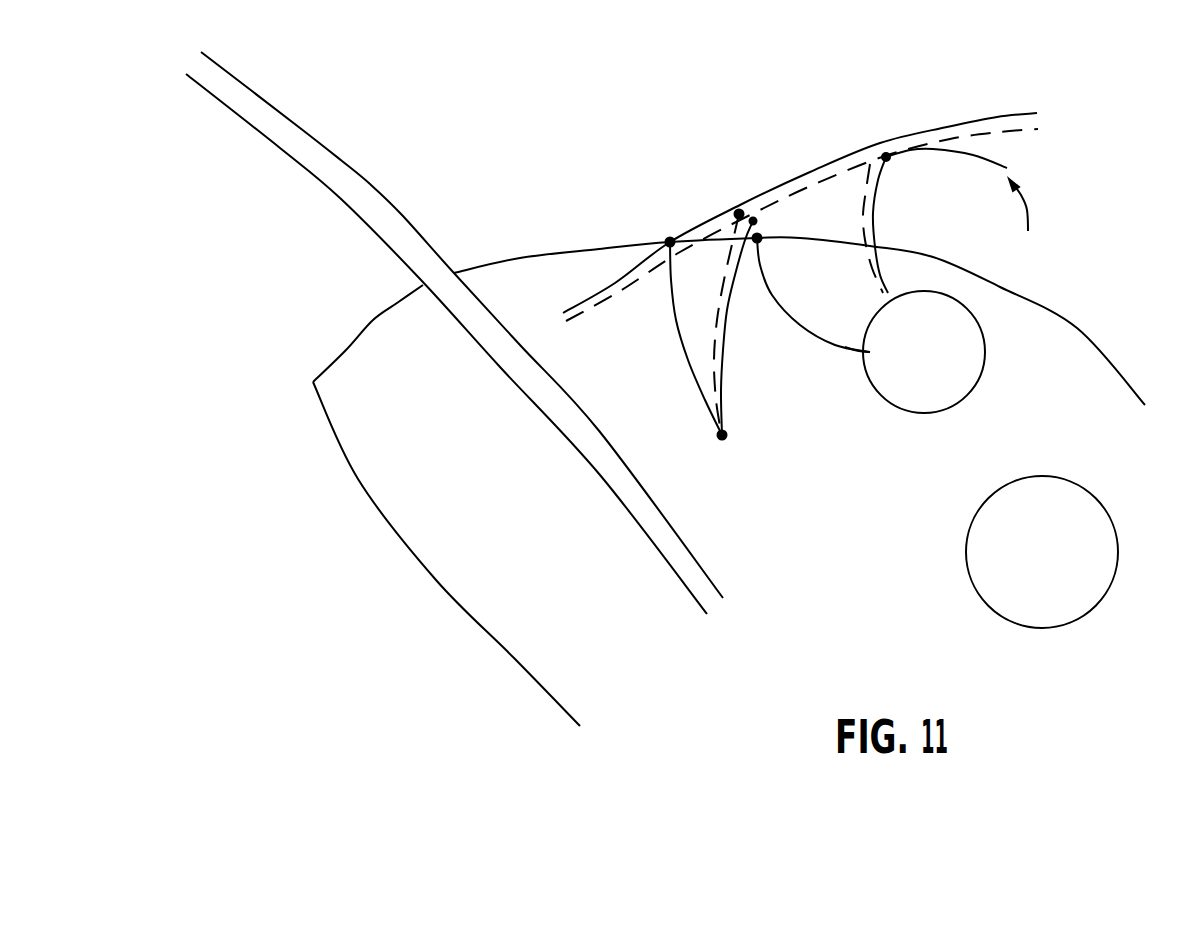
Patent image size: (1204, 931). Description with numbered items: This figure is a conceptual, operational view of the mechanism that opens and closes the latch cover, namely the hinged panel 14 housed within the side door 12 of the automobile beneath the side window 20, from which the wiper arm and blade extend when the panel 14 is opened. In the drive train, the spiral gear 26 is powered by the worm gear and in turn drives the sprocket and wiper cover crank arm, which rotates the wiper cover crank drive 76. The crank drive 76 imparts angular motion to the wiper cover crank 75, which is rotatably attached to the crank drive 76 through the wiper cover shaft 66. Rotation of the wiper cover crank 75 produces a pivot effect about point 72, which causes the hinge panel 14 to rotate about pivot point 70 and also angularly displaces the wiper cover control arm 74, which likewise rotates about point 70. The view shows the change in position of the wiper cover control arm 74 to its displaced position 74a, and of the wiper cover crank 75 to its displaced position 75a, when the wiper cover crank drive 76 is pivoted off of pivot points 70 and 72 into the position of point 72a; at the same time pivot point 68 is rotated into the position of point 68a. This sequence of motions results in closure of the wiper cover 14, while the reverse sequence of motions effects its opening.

The side door 12 is at (1077, 328).
The hinged panel 14 is at (885, 139).
The side window 20 is at (300, 129).
The spiral gear 26 is at (1058, 605).
The wiper cover shaft 66 is at (868, 353).
The pivot point 68 is at (756, 224).
The rotated position of pivot point 68 68a is at (668, 240).
The pivot point 70 is at (723, 440).
The pivot point 72 is at (978, 190).
The pivoted position of point 72 72a is at (739, 214).
The wiper cover control arm 74 is at (818, 342).
The displaced position of wiper cover control arm 74a is at (647, 338).
The wiper cover crank 75 is at (877, 223).
The displaced position of wiper cover crank 75a is at (723, 318).
The wiper cover crank drive 76 is at (957, 380).